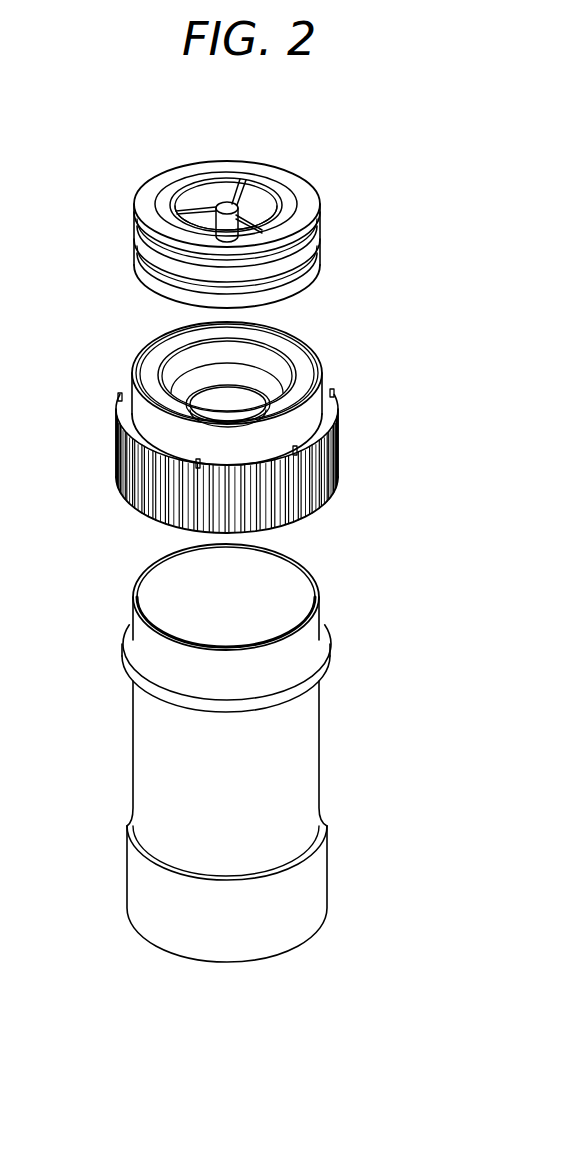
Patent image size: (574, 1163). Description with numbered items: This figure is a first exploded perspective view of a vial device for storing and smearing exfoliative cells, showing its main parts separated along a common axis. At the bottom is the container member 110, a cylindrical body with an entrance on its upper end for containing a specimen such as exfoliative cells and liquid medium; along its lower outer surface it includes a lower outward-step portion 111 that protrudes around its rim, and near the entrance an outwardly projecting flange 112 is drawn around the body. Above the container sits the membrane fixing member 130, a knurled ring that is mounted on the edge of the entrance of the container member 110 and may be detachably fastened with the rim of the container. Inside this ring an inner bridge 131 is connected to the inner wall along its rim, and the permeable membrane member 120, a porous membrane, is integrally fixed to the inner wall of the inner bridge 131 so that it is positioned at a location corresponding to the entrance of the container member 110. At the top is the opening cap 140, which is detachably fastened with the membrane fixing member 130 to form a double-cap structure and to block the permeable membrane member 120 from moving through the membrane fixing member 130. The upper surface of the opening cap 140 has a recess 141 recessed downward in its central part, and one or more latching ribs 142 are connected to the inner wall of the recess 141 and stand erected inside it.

The container member 110 is at (256, 753).
The lower outward-step portion 111 is at (320, 877).
The flange 112 is at (331, 657).
The permeable membrane member 120 is at (225, 408).
The membrane fixing member 130 is at (245, 417).
The inner bridge 131 is at (270, 375).
The opening cap 140 is at (261, 213).
The recess 141 is at (264, 203).
The latching ribs 142 is at (188, 209).